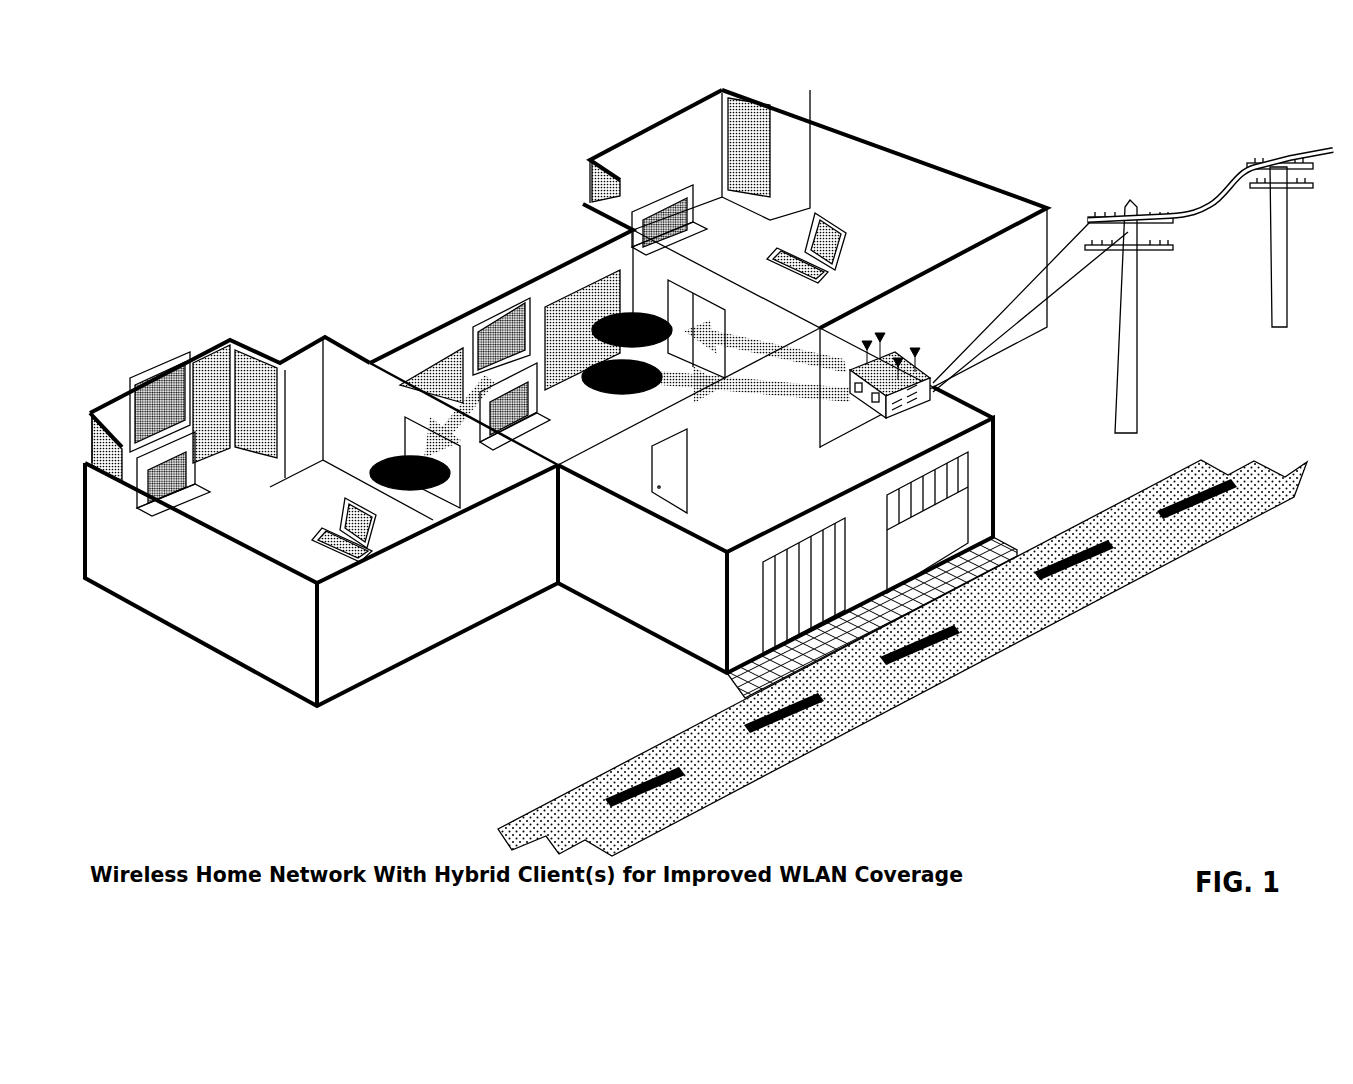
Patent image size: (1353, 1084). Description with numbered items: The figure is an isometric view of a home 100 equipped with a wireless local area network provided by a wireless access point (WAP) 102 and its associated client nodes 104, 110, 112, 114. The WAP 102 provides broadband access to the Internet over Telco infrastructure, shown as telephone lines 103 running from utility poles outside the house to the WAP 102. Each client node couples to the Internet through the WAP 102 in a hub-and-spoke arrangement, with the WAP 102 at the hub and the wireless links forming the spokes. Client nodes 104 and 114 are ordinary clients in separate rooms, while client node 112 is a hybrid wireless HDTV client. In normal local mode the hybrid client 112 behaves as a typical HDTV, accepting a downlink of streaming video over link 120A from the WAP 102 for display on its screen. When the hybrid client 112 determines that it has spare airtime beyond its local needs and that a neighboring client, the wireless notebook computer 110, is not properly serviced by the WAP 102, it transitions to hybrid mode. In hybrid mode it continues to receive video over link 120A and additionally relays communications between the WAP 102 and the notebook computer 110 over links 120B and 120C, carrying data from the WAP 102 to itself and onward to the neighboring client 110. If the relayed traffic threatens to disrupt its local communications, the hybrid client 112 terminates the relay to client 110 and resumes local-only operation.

The home 100 is at (310, 706).
The wireless access point (WAP) 102 is at (938, 392).
The telephone lines 103 is at (1208, 207).
The client node 104 is at (810, 244).
The wireless notebook computer 110 is at (335, 522).
The hybrid wireless client node 112 is at (468, 322).
The client node 114 is at (150, 392).
The link 120A is at (733, 339).
The link 120B is at (748, 392).
The link 120C is at (463, 437).